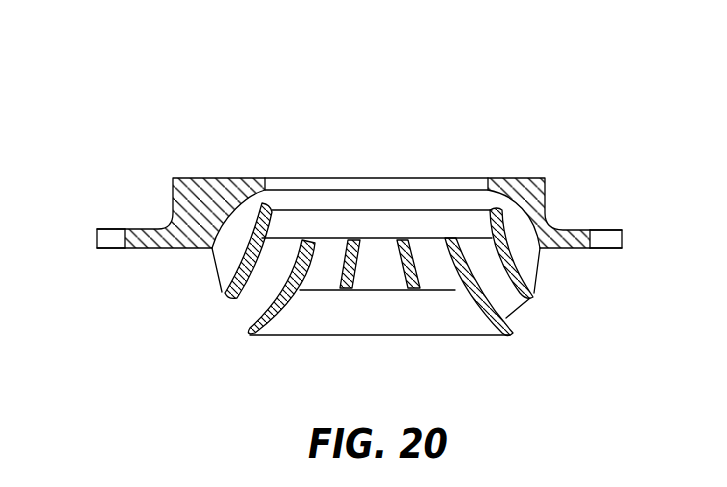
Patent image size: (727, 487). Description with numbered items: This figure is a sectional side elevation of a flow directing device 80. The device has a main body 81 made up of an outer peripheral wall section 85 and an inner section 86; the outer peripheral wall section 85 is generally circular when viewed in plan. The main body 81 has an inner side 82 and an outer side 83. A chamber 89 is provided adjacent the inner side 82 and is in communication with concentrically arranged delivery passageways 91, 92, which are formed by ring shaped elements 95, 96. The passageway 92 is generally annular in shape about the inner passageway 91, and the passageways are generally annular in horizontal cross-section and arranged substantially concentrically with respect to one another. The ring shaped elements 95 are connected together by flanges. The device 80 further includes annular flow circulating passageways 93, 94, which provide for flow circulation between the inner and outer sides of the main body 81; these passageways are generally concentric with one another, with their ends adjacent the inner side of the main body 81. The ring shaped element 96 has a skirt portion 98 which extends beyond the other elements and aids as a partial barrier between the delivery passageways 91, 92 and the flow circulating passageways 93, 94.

The flow directing device 80 is at (198, 136).
The main body 81 is at (204, 254).
The inner side 82 is at (240, 177).
The outer side 83 is at (173, 250).
The outer peripheral wall section 85 is at (546, 191).
The inner section 86 is at (518, 258).
The chamber 89 is at (358, 178).
The inner delivery passageway 91 is at (375, 273).
The delivery passageway 92 is at (328, 263).
The flow circulating passageway 93 is at (260, 298).
The flow circulating passageway 94 is at (227, 260).
The ring shaped elements 95 is at (423, 289).
The ring shaped element 96 is at (477, 310).
The skirt portion 98 is at (487, 327).